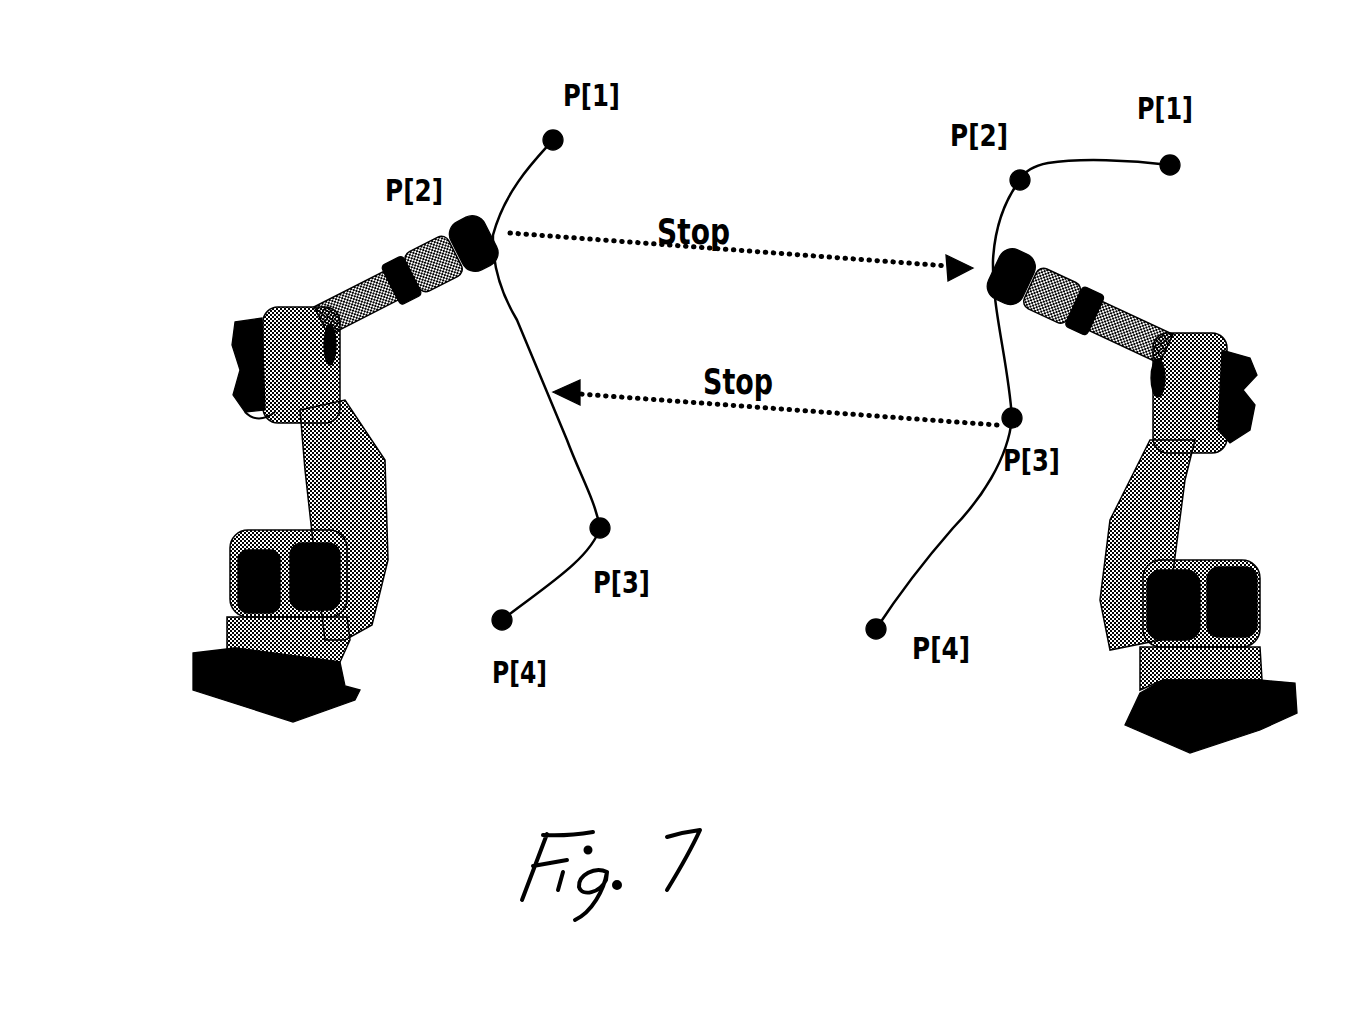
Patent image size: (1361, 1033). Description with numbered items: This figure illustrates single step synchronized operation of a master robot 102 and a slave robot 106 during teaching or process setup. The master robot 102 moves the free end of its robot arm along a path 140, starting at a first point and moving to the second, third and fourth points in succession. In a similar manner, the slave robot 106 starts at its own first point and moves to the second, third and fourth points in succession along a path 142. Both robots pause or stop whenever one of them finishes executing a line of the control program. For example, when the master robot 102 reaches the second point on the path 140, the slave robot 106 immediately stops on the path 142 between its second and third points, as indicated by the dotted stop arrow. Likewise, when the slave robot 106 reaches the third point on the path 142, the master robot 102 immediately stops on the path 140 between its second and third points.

The master robot 102 is at (263, 315).
The slave robot 106 is at (1227, 350).
The path 140 is at (578, 467).
The path 142 is at (955, 528).